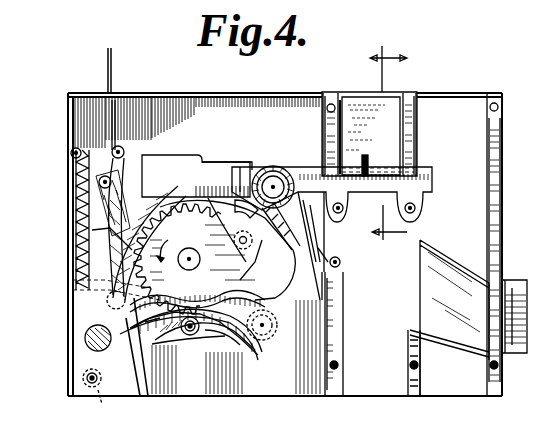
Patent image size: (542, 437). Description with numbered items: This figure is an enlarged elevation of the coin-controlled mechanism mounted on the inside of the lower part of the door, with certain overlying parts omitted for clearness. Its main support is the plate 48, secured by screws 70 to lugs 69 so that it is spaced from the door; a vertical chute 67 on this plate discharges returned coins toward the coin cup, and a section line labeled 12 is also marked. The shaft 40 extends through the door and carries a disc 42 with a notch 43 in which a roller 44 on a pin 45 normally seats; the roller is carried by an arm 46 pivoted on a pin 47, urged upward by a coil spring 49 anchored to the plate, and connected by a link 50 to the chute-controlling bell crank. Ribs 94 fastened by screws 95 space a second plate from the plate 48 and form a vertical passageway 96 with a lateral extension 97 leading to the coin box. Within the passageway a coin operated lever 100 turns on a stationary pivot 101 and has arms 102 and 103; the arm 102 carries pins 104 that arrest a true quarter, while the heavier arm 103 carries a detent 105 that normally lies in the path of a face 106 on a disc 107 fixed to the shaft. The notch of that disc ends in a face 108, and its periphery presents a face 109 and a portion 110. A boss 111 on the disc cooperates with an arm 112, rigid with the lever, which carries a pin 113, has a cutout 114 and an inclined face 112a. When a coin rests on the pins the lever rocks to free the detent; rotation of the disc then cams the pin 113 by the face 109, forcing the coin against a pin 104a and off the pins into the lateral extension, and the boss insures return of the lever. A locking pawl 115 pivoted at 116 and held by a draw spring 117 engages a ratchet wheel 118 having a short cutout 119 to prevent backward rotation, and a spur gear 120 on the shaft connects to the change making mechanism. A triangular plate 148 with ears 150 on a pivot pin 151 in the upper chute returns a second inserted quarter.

The section line 12 is at (388, 144).
The shaft 40 is at (539, 95).
The disc 42 is at (158, 330).
The notch or depression 43 is at (175, 338).
The roller 44 is at (215, 335).
The pin 45 is at (192, 336).
The arm 46 is at (255, 340).
The pin 47 is at (275, 335).
The plate 48 is at (240, 94).
The coil spring 49 is at (76, 265).
The link 50 is at (112, 68).
The vertical chute 67 is at (408, 392).
The lugs 69 is at (101, 407).
The screws 70 is at (86, 378).
The ribs or spacing strips 94 is at (344, 314).
The screws 95 is at (490, 110).
The vertical passageway or chute 96 is at (417, 113).
The lateral extension 97 is at (455, 280).
The coin operated lever 100 is at (290, 170).
The stationary pivot 101 is at (272, 172).
The arm 102 is at (344, 206).
The arm 103 is at (222, 160).
The pins 104 is at (416, 208).
The pin 104a is at (340, 266).
The detent or pawl 105 is at (176, 156).
The coacting face 106 is at (227, 249).
The disc 107 is at (240, 238).
The face 108 is at (86, 333).
The face 109 is at (282, 226).
The portion 110 is at (232, 190).
The boss or dwell 111 is at (238, 260).
The arm 112 is at (336, 250).
The lower inclined face 112a is at (318, 300).
The pin 113 is at (242, 167).
The cutout 114 is at (329, 245).
The locking pawl 115 is at (124, 149).
The pivot 116 is at (99, 183).
The draw spring 117 is at (78, 147).
The ratchet wheel 118 is at (130, 347).
The short cutout 119 is at (90, 226).
The spur gear 120 is at (197, 292).
The member or plate 148 is at (364, 98).
The extensions or ears 150 is at (408, 126).
The pivot pin 151 is at (400, 158).